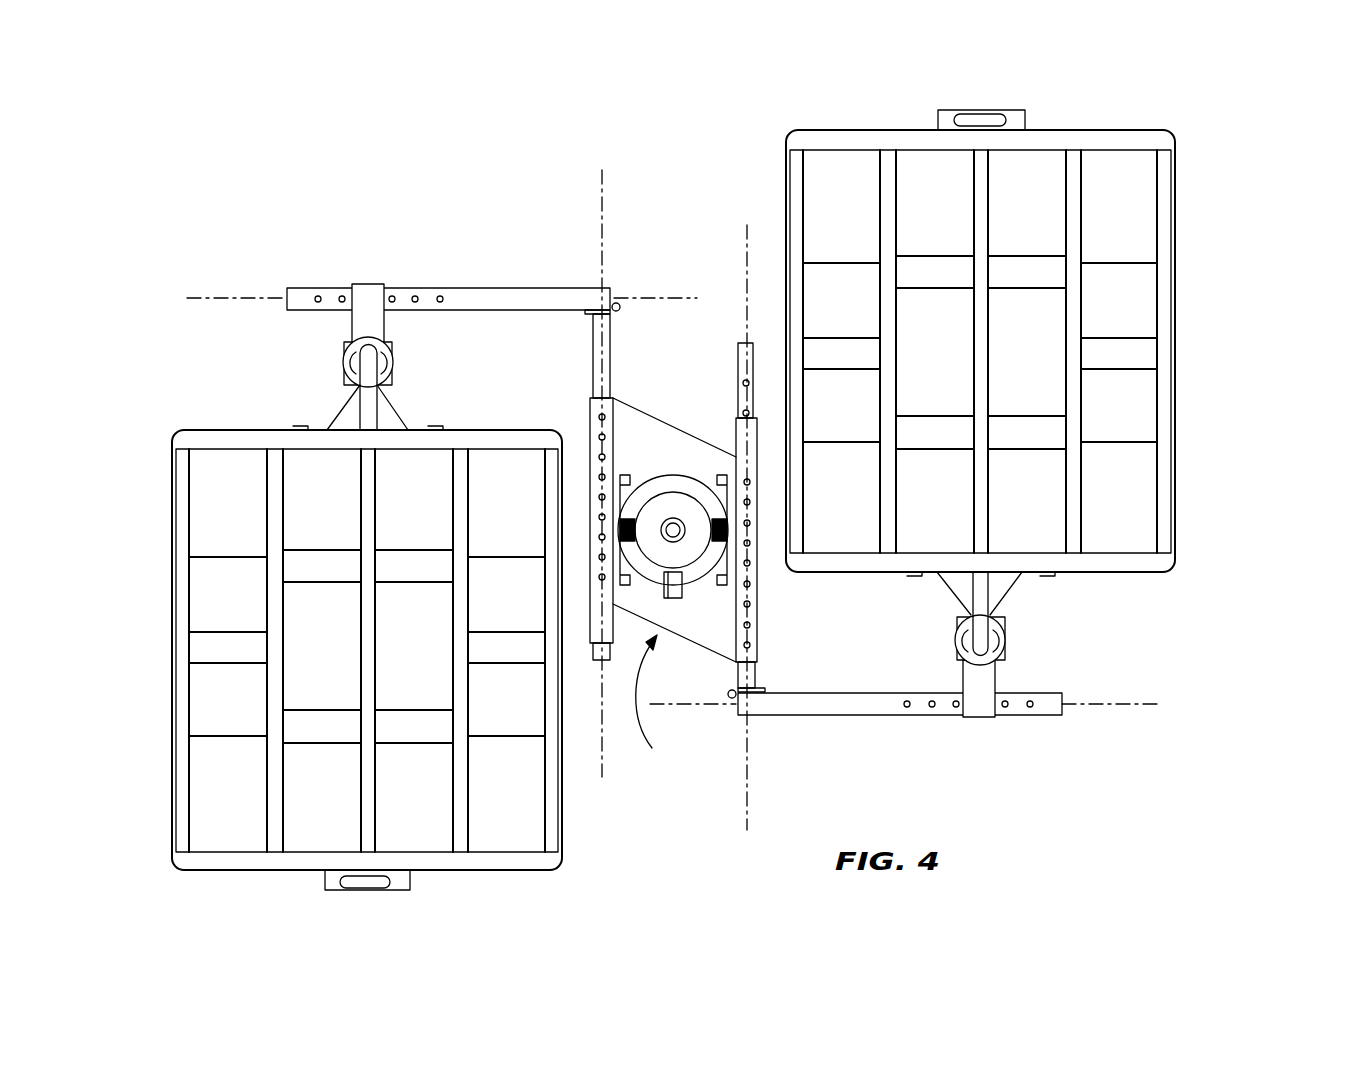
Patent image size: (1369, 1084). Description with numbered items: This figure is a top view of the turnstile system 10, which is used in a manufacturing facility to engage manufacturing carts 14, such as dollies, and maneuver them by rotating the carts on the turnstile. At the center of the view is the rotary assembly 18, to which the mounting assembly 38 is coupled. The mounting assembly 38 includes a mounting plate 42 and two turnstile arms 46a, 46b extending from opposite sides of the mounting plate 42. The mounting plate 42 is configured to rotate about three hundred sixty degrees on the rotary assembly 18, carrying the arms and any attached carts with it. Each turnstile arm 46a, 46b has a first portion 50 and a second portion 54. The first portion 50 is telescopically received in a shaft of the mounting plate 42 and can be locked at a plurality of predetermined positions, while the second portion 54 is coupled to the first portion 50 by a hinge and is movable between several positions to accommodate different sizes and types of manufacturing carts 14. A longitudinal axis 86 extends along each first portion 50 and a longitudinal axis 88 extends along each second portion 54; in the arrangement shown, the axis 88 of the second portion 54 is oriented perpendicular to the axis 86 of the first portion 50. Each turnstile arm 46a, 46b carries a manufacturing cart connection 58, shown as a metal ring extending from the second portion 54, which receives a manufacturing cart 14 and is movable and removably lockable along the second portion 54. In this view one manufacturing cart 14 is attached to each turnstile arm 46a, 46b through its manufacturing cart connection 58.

The turnstile system 10 is at (1240, 183).
The manufacturing cart 14 is at (182, 710).
The rotary assembly 18 is at (672, 508).
The mounting assembly 38 is at (657, 708).
The mounting plate 42 is at (635, 430).
The turnstile arm 46a is at (541, 287).
The turnstile arm 46b is at (838, 715).
The first portion 50 is at (596, 353).
The second portion 54 is at (430, 286).
The manufacturing cart connection 58 is at (350, 349).
The longitudinal axis 86 is at (604, 748).
The longitudinal axis 88 is at (244, 290).